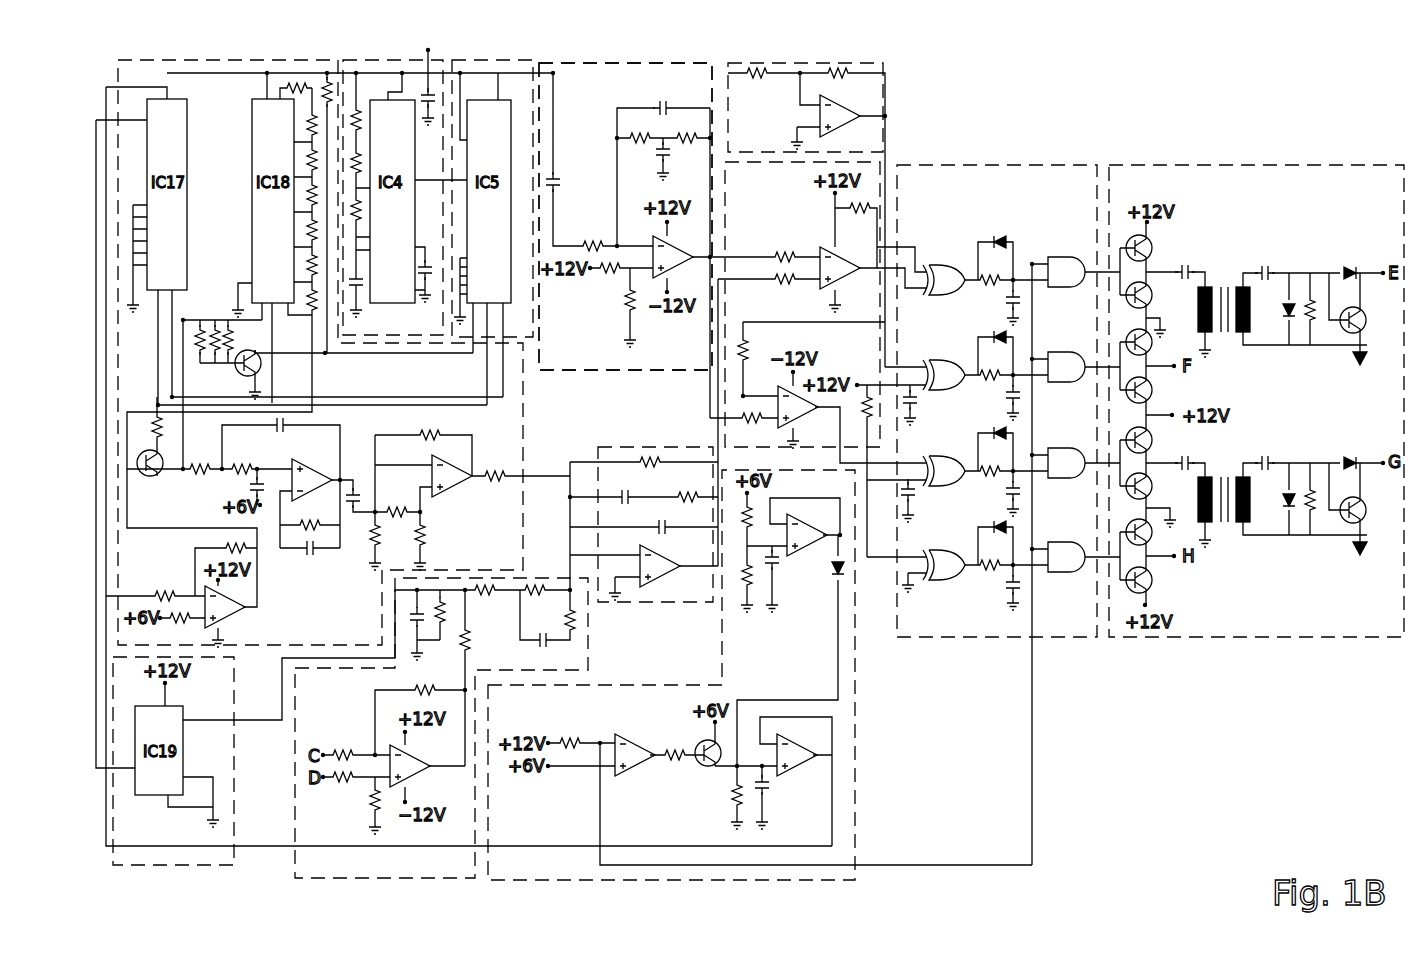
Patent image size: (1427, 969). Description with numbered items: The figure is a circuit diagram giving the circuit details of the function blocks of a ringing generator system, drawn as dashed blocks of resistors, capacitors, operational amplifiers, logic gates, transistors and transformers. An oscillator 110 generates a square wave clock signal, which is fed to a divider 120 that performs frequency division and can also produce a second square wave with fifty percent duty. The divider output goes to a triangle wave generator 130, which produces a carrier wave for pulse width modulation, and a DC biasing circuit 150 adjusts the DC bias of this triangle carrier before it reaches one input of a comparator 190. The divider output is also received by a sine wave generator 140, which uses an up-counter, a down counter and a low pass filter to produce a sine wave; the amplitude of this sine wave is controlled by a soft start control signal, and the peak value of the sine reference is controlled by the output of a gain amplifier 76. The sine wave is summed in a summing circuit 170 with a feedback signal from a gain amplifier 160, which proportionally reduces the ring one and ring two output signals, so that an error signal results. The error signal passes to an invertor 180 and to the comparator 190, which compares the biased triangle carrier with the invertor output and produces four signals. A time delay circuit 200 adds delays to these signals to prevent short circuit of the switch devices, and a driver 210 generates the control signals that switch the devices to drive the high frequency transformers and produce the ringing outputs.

The sine wave generator 140 is at (166, 60).
The oscillator 110 is at (405, 60).
The divider 120 is at (462, 60).
The triangle wave generator 130 is at (582, 63).
The DC biasing circuit 150 is at (625, 216).
The invertor 180 is at (782, 63).
The comparator 190 is at (718, 388).
The time delay circuit 200 is at (994, 165).
The driver 210 is at (1258, 165).
The summing circuit 170 is at (613, 447).
The gain amplifier 160 is at (588, 668).
The gain amplifier 76 is at (857, 740).